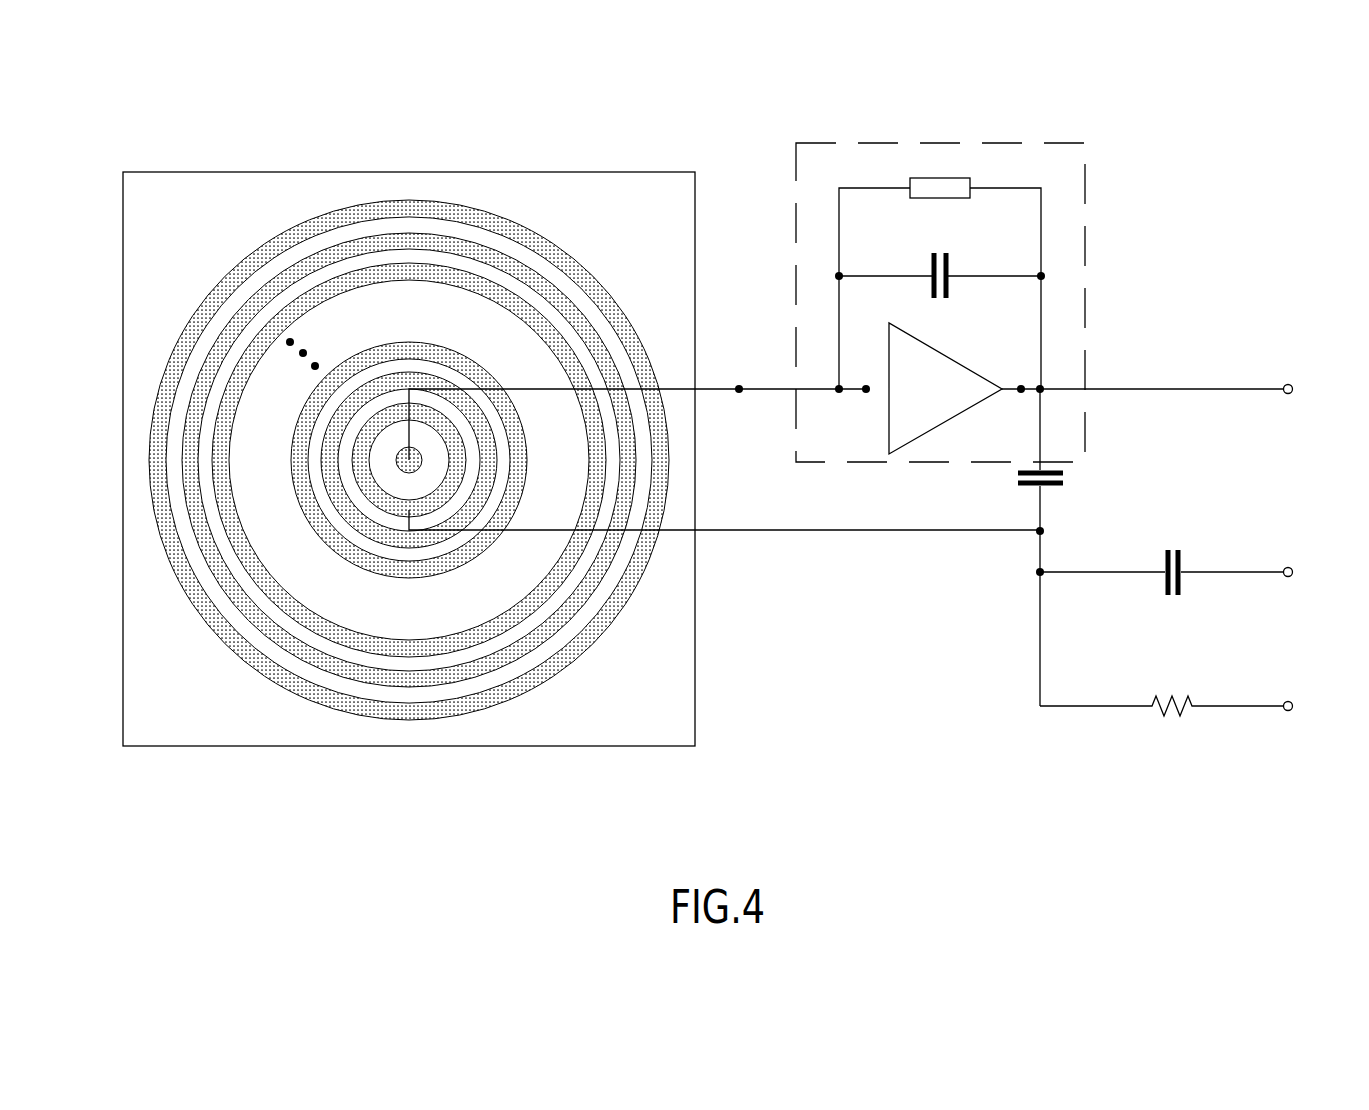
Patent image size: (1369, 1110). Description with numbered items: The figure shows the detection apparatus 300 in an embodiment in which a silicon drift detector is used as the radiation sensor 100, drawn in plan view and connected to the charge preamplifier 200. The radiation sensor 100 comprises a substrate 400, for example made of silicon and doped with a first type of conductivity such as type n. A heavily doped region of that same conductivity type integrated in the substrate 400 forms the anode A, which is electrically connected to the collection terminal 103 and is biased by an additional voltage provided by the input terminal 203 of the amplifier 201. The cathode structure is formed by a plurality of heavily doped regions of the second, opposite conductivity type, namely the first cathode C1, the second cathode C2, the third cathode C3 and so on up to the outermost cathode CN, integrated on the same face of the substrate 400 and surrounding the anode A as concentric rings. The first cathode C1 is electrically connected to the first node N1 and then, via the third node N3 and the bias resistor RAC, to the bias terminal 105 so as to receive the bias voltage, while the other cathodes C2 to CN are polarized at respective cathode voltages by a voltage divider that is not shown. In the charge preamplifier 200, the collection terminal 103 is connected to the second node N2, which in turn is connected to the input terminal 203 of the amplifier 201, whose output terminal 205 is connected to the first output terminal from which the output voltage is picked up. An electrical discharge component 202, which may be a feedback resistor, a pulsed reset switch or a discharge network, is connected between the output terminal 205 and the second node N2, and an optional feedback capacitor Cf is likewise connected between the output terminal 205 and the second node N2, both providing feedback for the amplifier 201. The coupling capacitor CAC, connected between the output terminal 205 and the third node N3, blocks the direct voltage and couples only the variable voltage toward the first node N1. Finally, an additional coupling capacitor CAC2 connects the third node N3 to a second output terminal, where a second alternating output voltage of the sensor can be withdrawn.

The radiation sensor 100 is at (298, 172).
The N-th cathode region CN is at (178, 313).
The third cathode region C3 is at (278, 424).
The second cathode region C2 is at (306, 476).
The first cathode region C1 is at (352, 499).
The anode A is at (390, 434).
The substrate 400 is at (511, 600).
The detection apparatus 300 is at (946, 33).
The charge preamplifier 200 is at (808, 138).
The collection terminal 103 is at (739, 395).
The second node N2 is at (838, 385).
The input terminal 203 is at (866, 394).
The amplifier 201 is at (906, 333).
The electrical discharge component 202 is at (944, 168).
The feedback capacitor Cf is at (934, 253).
The output terminal 205 is at (1023, 385).
The coupling capacitor CAC is at (1065, 547).
The first node N1 is at (1038, 533).
The third node N3 is at (1038, 574).
The additional coupling capacitor CAC2 is at (1166, 551).
The bias resistor RAC is at (1162, 684).
The bias terminal 105 is at (1290, 700).